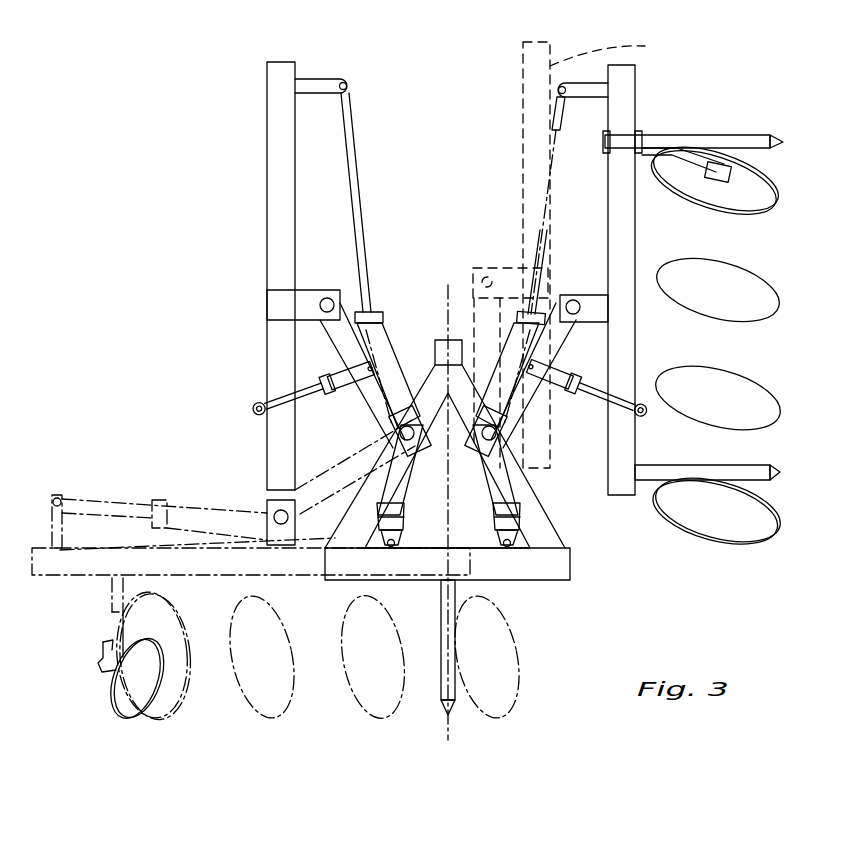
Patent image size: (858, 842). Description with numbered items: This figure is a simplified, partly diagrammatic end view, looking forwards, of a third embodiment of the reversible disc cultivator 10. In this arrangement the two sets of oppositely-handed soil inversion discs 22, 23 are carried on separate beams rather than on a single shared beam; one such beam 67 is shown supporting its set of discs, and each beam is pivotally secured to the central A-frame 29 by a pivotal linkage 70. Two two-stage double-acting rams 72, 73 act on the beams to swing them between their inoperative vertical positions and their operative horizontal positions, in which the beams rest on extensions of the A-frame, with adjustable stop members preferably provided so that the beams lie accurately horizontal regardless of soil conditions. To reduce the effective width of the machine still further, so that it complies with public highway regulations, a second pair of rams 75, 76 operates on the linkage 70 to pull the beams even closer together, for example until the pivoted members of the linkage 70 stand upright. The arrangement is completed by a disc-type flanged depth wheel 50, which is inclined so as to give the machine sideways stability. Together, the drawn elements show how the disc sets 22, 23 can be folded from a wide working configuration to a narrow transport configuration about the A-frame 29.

The reversible disc cultivator 10 is at (162, 230).
The soil inversion discs 22 is at (767, 190).
The soil inversion discs 23 is at (248, 636).
The A-frame 29 is at (562, 540).
The disc-type flanged depth wheel 50 is at (115, 705).
The beam 67 is at (272, 122).
The pivotal linkage 70 is at (335, 350).
The two-stage double-acting ram 72 is at (496, 512).
The two-stage double-acting ram 73 is at (222, 500).
The ram 75 is at (545, 377).
The ram 76 is at (358, 385).